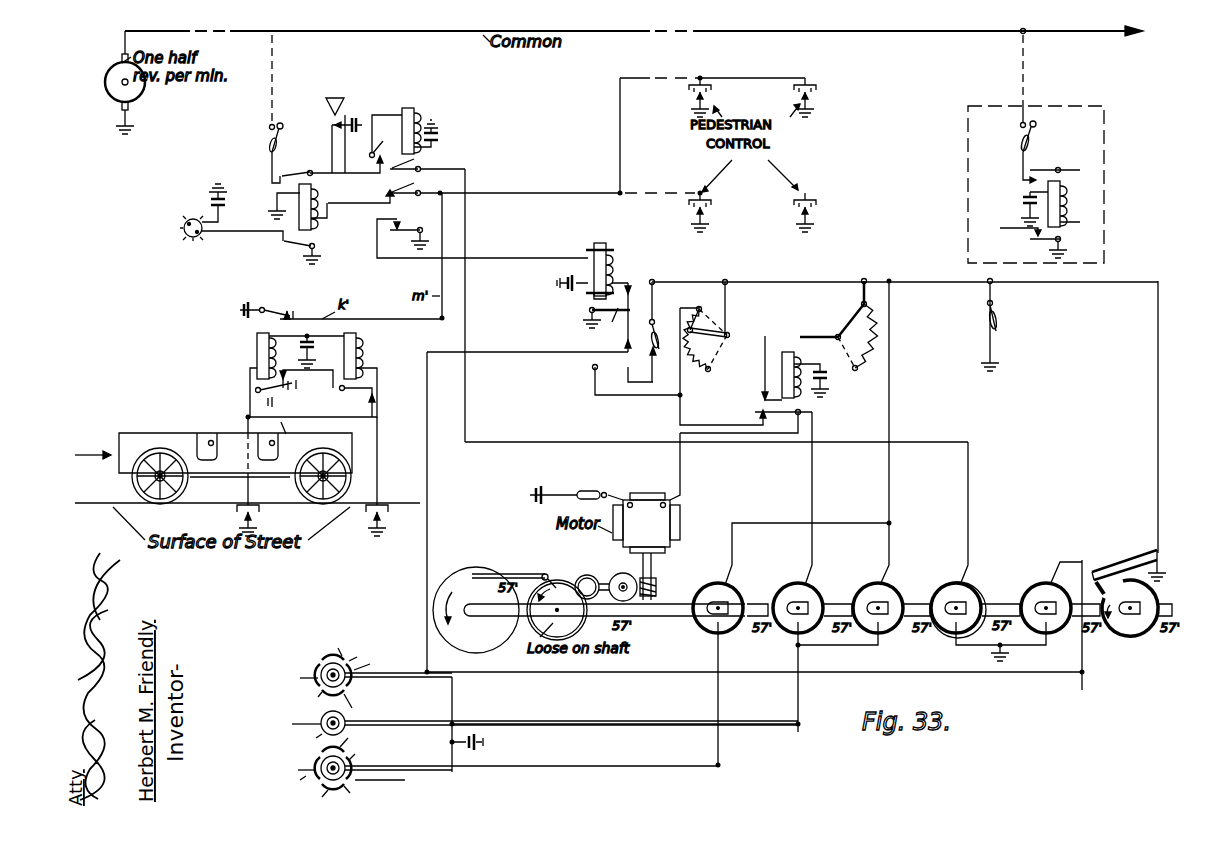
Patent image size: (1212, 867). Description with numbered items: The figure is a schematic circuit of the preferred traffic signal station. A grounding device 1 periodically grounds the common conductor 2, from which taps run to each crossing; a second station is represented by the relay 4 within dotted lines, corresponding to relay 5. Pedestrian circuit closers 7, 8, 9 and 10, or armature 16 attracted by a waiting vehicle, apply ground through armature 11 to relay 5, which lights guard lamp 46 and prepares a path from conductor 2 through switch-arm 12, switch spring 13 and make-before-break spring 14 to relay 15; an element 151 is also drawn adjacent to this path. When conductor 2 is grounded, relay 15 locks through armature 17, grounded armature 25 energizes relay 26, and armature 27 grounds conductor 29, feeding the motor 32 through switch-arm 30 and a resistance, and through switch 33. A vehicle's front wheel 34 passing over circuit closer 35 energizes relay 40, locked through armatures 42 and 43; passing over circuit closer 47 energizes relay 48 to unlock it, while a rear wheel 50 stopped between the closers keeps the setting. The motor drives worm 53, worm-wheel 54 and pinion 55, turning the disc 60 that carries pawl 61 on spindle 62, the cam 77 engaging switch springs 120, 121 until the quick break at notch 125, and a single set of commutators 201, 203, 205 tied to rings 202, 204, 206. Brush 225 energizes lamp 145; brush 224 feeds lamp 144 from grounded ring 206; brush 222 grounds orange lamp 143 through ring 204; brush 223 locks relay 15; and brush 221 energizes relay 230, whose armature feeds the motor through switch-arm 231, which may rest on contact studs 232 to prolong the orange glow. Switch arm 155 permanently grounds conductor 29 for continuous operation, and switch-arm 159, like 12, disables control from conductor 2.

The grounding device 1 is at (137, 96).
The common conductor 2 is at (757, 31).
The relay 4 is at (1066, 195).
The relay 5 is at (314, 204).
The circuit closer 7 is at (708, 205).
The circuit closer 8 is at (813, 205).
The circuit closer 9 is at (813, 92).
The circuit closer 10 is at (708, 92).
The armature 11 is at (542, 184).
The switch-arm 12 is at (270, 134).
The switch spring 13 is at (325, 155).
The make-before-break spring 14 is at (386, 136).
The relay 15 is at (419, 109).
The armature 16 is at (266, 304).
The armature 17 is at (423, 168).
The armature 25 is at (482, 234).
The relay 26 is at (608, 251).
The armature 27 is at (606, 325).
The conductor 29 is at (790, 283).
The switch-arm 30 is at (715, 338).
The motor 32 is at (647, 497).
The switch-arm 33 is at (601, 494).
The front wheel 34 is at (346, 482).
The circuit closer 35 is at (252, 505).
The relay 40 is at (257, 345).
The armature 42 is at (313, 392).
The armature 43 is at (356, 392).
The lamp 46 is at (184, 226).
The circuit closer 47 is at (382, 505).
The relay 48 is at (357, 348).
The rear wheel 50 is at (187, 485).
The worm 53 is at (656, 588).
The worm-wheel 54 is at (600, 567).
The pinion 55 is at (590, 576).
The front face indicating disc 60 is at (476, 610).
The pawl 61 is at (557, 598).
The spindle 62 is at (520, 575).
The cam 77 is at (1130, 608).
The switch spring 120 is at (1125, 552).
The switch spring 121 is at (1103, 572).
The notch 125 is at (1148, 599).
The orange lamp 143 is at (314, 717).
The lamp 144 is at (312, 671).
The lamp 145 is at (313, 763).
The rectifier 151 is at (341, 100).
The switch arm 155 is at (986, 325).
The switch-arm 159 is at (1020, 136).
The commutator 201 is at (708, 618).
The ring 202 is at (720, 628).
The commutator 203 is at (810, 594).
The ring 204 is at (886, 642).
The commutator 205 is at (973, 594).
The ring 206 is at (1050, 643).
The brush 221 is at (829, 558).
The brush 222 is at (909, 558).
The brush 223 is at (987, 558).
The brush 224 is at (1054, 564).
The brush 225 is at (752, 556).
The relay 230 is at (802, 376).
The switch-arm 231 is at (843, 323).
The contact studs 232 is at (888, 330).